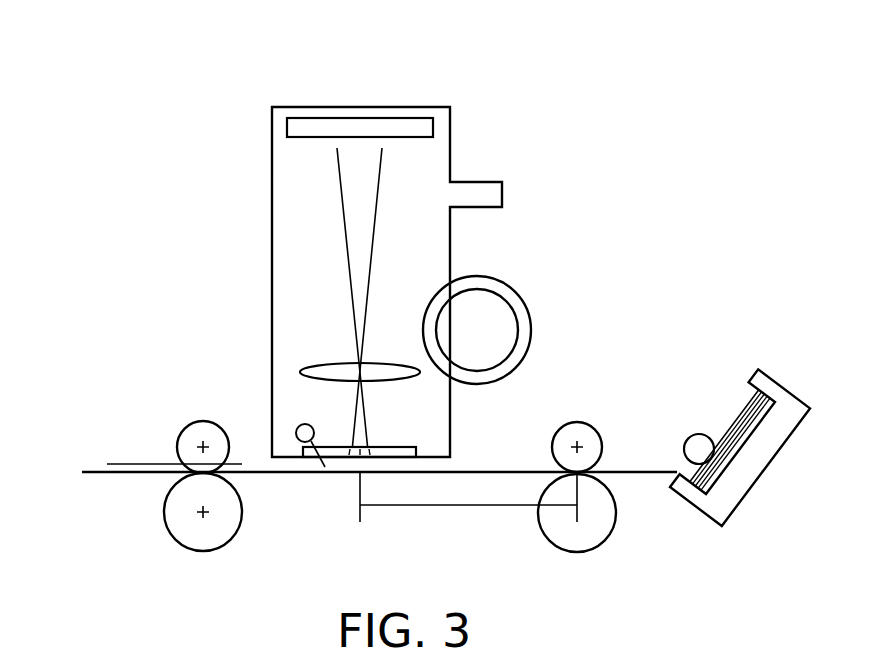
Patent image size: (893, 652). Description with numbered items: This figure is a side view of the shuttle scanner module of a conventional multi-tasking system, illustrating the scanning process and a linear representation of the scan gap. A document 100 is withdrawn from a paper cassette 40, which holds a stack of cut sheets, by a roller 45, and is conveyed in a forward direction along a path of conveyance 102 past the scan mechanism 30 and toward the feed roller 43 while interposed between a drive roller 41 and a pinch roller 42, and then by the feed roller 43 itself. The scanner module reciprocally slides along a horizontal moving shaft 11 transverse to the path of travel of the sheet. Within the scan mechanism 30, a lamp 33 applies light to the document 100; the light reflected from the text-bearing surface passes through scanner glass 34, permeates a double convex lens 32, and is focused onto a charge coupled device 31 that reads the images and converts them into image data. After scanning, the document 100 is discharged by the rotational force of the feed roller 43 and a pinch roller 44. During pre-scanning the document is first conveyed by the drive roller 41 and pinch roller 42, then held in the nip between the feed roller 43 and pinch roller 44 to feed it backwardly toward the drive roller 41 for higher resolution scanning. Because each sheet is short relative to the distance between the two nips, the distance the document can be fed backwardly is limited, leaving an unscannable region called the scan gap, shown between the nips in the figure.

The scan mechanism 30 is at (287, 100).
The charge coupled device 31 is at (428, 127).
The double convex lens 32 is at (305, 368).
The lamp 33 is at (297, 428).
The scanner glass 34 is at (341, 452).
The horizontal moving shaft 11 is at (507, 330).
The document 100 is at (126, 458).
The path of conveyance 102 is at (115, 475).
The feed roller 43 is at (167, 527).
The pinch roller 44 is at (187, 423).
The drive roller 41 is at (615, 520).
The pinch roller 42 is at (587, 432).
The roller 45 is at (695, 437).
The paper cassette 40 is at (752, 465).